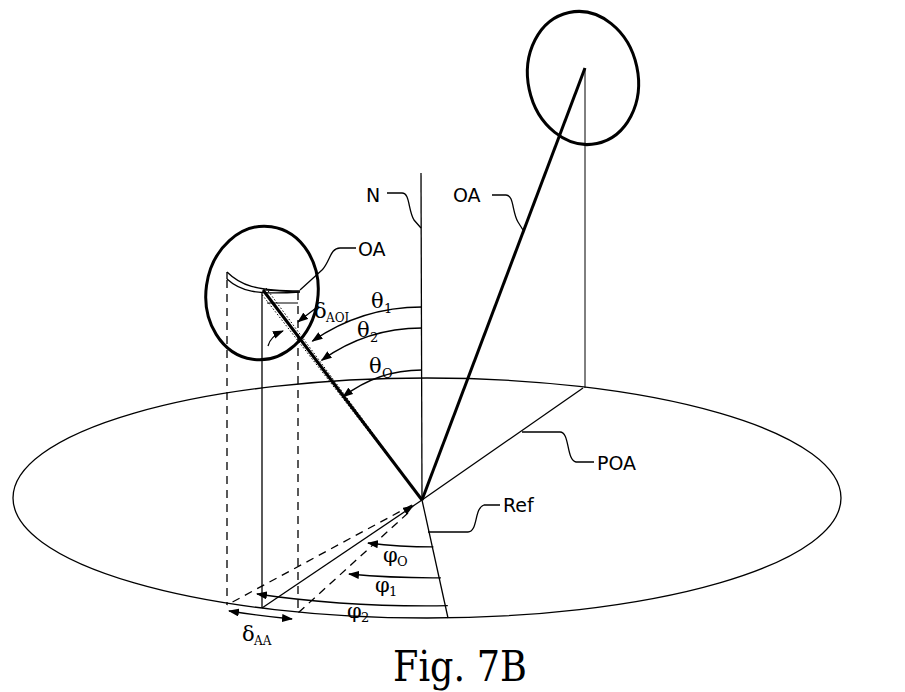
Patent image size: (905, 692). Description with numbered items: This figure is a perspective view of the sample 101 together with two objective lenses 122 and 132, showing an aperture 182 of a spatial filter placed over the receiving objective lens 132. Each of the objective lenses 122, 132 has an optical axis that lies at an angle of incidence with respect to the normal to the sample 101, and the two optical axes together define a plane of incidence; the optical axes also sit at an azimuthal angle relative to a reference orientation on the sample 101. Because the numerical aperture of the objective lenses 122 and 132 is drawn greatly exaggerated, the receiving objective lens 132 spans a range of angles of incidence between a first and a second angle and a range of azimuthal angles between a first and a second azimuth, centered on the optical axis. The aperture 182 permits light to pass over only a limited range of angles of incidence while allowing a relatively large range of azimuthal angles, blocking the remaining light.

The sample 101 is at (778, 438).
The objective lens 122 is at (637, 80).
The receiving objective lens 132 is at (228, 266).
The aperture 182 is at (245, 276).